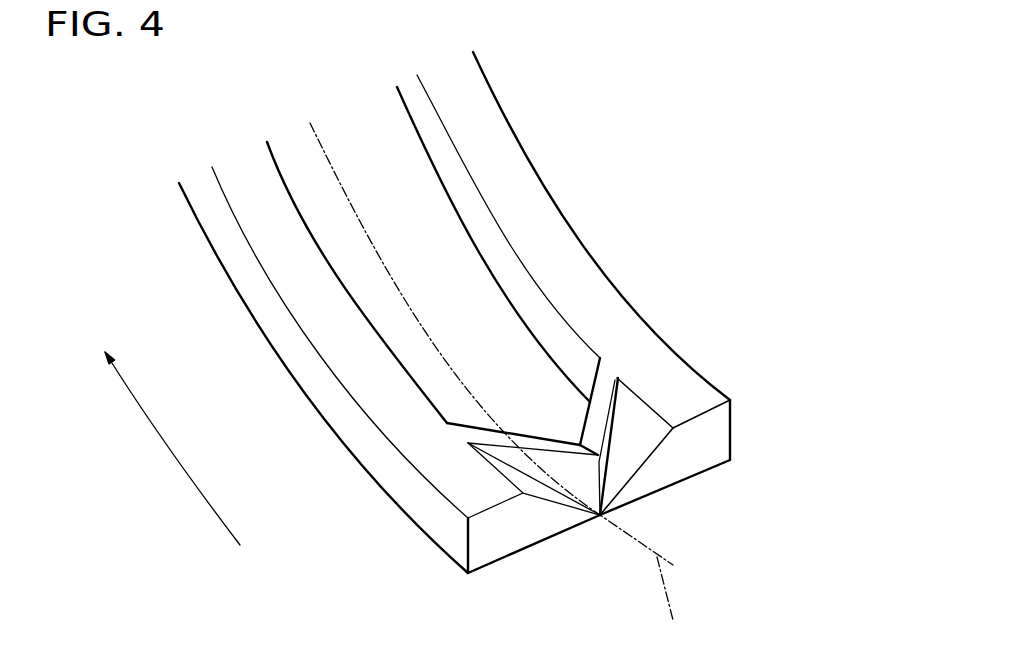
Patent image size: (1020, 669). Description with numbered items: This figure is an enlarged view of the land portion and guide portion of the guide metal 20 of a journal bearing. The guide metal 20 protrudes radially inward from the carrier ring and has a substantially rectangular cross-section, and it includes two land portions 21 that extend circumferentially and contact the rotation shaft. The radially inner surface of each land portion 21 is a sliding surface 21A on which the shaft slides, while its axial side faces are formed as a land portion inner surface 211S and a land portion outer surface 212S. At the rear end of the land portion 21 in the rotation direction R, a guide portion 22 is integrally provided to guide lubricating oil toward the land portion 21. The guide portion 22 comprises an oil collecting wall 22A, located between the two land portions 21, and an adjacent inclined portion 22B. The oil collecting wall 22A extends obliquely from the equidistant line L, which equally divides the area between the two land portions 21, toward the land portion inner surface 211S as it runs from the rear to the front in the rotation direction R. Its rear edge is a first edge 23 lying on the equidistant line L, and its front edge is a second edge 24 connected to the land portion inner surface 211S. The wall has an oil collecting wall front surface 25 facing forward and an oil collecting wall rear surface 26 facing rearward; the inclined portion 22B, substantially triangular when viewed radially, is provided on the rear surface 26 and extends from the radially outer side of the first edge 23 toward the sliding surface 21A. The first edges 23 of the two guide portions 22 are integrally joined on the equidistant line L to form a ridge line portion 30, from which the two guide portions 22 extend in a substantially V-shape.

The guide metal 20 is at (706, 291).
The land portion 21 is at (552, 167).
The sliding surface 21A is at (690, 384).
The land portion inner surface 211S is at (528, 303).
The land portion outer surface 212S is at (452, 537).
The guide portion 22 is at (602, 548).
The oil collecting wall 22A is at (602, 390).
The inclined portion 22B is at (633, 440).
The first edge 23 is at (608, 446).
The second edge 24 is at (458, 432).
The oil collecting wall front surface 25 is at (557, 442).
The oil collecting wall rear surface 26 is at (580, 480).
The ridge line portion 30 is at (600, 482).
The equidistant line L is at (495, 389).
The rotation direction R is at (172, 448).